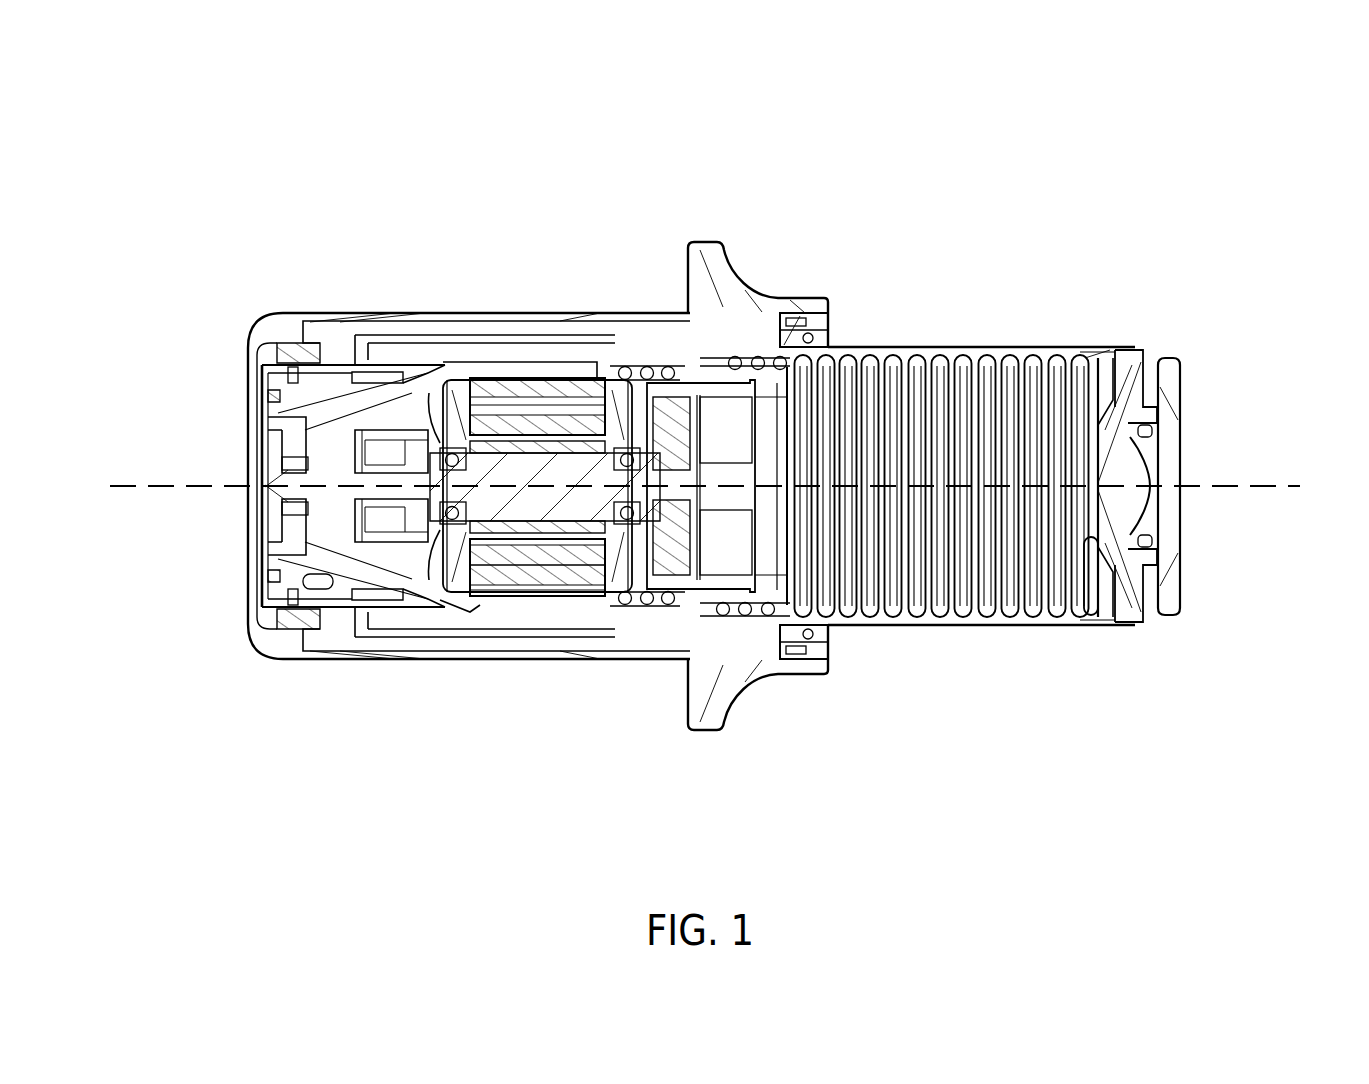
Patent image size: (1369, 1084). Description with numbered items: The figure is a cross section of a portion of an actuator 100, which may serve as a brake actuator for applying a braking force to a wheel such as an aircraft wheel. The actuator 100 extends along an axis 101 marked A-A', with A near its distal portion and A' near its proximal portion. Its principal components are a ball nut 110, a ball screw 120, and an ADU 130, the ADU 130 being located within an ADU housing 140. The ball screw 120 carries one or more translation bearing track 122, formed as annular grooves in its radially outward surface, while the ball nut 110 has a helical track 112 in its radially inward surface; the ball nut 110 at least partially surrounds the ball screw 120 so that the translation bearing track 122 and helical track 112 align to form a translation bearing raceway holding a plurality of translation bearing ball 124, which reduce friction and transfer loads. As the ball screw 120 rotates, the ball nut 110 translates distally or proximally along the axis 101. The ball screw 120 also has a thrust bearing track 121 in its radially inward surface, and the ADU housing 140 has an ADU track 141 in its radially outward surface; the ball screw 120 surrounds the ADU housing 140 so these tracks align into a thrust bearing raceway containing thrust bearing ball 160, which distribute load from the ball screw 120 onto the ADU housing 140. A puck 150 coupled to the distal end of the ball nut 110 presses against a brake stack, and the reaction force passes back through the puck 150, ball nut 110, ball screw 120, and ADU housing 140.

The actuator 100 is at (1027, 152).
The axis 101 is at (135, 486).
The ball nut 110 is at (908, 347).
The helical track 112 is at (876, 622).
The ball screw 120 is at (690, 372).
The thrust bearing track 121 is at (636, 606).
The translation bearing track 122 is at (793, 648).
The translation bearing ball 124 is at (742, 358).
The ADU 130 is at (535, 470).
The ADU housing 140 is at (572, 600).
The ADU track 141 is at (652, 368).
The puck 150 is at (1168, 372).
The thrust bearing ball 160 is at (610, 604).